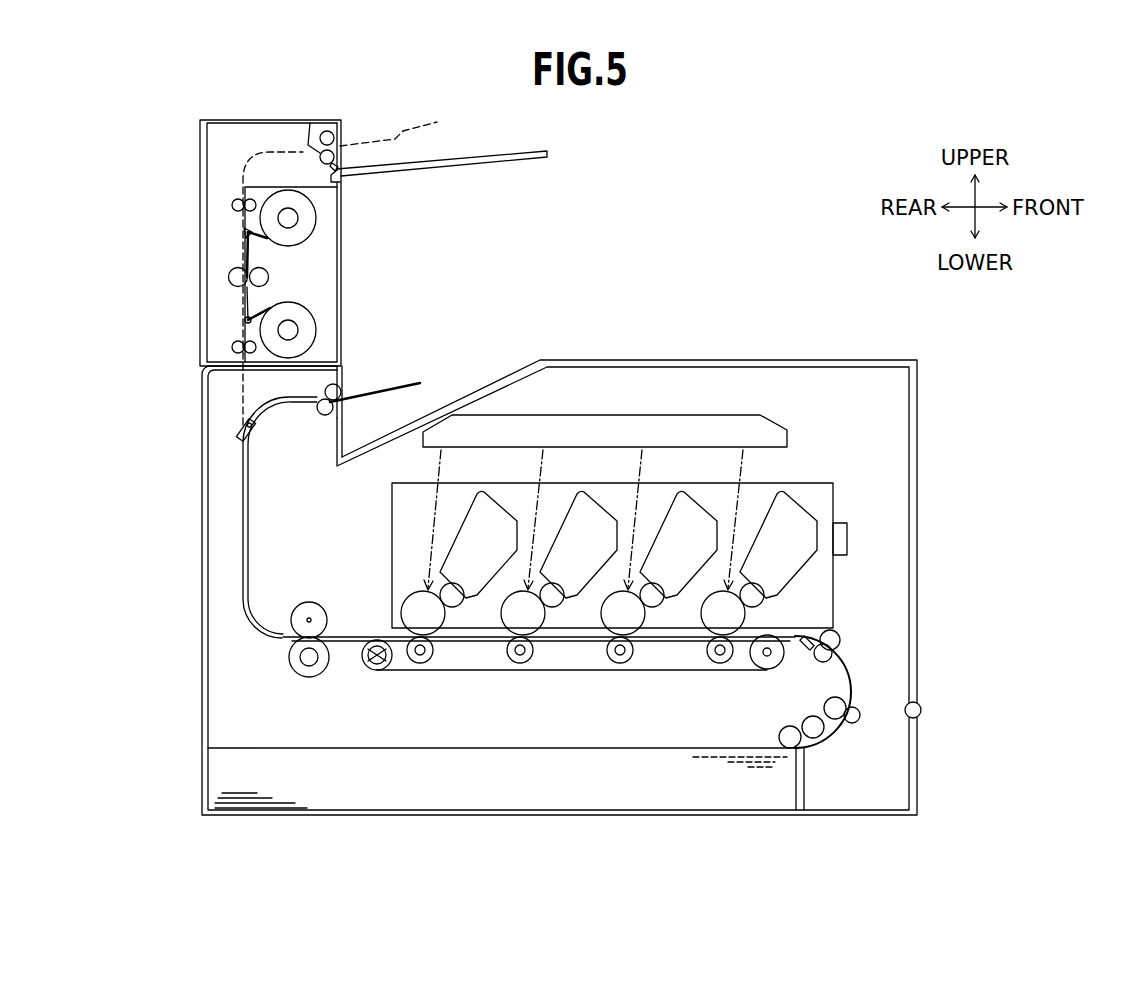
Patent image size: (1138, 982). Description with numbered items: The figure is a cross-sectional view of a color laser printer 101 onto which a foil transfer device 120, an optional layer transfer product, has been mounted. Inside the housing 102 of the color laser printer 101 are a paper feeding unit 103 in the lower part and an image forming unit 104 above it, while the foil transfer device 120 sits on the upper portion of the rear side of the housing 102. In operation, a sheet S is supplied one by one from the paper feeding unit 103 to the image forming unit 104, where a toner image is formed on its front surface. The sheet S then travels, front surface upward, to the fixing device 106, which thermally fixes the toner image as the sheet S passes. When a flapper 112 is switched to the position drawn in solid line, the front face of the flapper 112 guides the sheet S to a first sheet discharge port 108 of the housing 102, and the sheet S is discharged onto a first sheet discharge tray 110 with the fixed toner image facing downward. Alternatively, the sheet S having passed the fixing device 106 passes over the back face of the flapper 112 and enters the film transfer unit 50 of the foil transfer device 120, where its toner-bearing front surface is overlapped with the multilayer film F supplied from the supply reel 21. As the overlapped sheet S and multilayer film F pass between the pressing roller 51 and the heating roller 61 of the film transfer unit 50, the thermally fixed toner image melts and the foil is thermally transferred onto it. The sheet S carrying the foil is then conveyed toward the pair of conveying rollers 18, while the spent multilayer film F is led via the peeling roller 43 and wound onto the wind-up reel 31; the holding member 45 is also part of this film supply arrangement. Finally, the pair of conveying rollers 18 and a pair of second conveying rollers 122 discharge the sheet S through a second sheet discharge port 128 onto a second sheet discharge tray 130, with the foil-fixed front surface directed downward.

The color laser printer 101 is at (800, 257).
The housing 102 is at (827, 358).
The paper feeding unit 103 is at (843, 748).
The image forming unit 104 is at (818, 428).
The fixing device 106 is at (312, 578).
The first sheet discharge port 108 is at (338, 408).
The first sheet discharge tray 110 is at (492, 384).
The flapper 112 is at (237, 432).
The foil transfer device 120 is at (192, 213).
The pair of second conveying rollers 122 is at (321, 131).
The second sheet discharge port 128 is at (340, 138).
The second sheet discharge tray 130 is at (494, 162).
The conveying rollers 18 is at (233, 203).
The supply reel 21 is at (309, 326).
The wind-up reel 31 is at (309, 219).
The peeling roller 43 is at (244, 238).
The holding member 45 is at (243, 249).
The film transfer unit 50 is at (238, 297).
The pressing roller 51 is at (230, 275).
The heating roller 61 is at (269, 276).
The multilayer film F is at (268, 248).
The sheet S is at (577, 748).